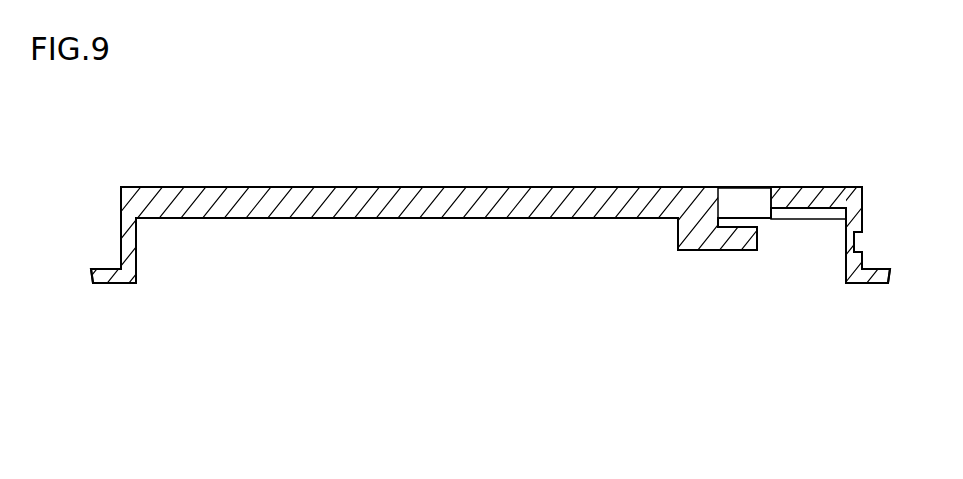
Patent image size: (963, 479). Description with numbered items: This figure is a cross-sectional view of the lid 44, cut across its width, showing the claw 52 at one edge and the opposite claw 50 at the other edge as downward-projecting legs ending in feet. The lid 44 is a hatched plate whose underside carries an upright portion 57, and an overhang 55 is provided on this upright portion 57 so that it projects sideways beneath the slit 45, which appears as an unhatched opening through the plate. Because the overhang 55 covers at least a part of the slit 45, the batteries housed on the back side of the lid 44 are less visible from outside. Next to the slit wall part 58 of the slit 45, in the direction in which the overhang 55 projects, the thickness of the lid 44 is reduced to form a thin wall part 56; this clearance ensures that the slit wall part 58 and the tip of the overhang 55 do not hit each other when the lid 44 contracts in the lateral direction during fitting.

The lid 44 is at (507, 457).
The slit 45 is at (738, 200).
The claw 50 is at (873, 273).
The claw 52 is at (105, 272).
The overhang 55 is at (733, 242).
The thin wall part 56 is at (805, 212).
The upright portion 57 is at (672, 227).
The slit wall part 58 is at (770, 196).